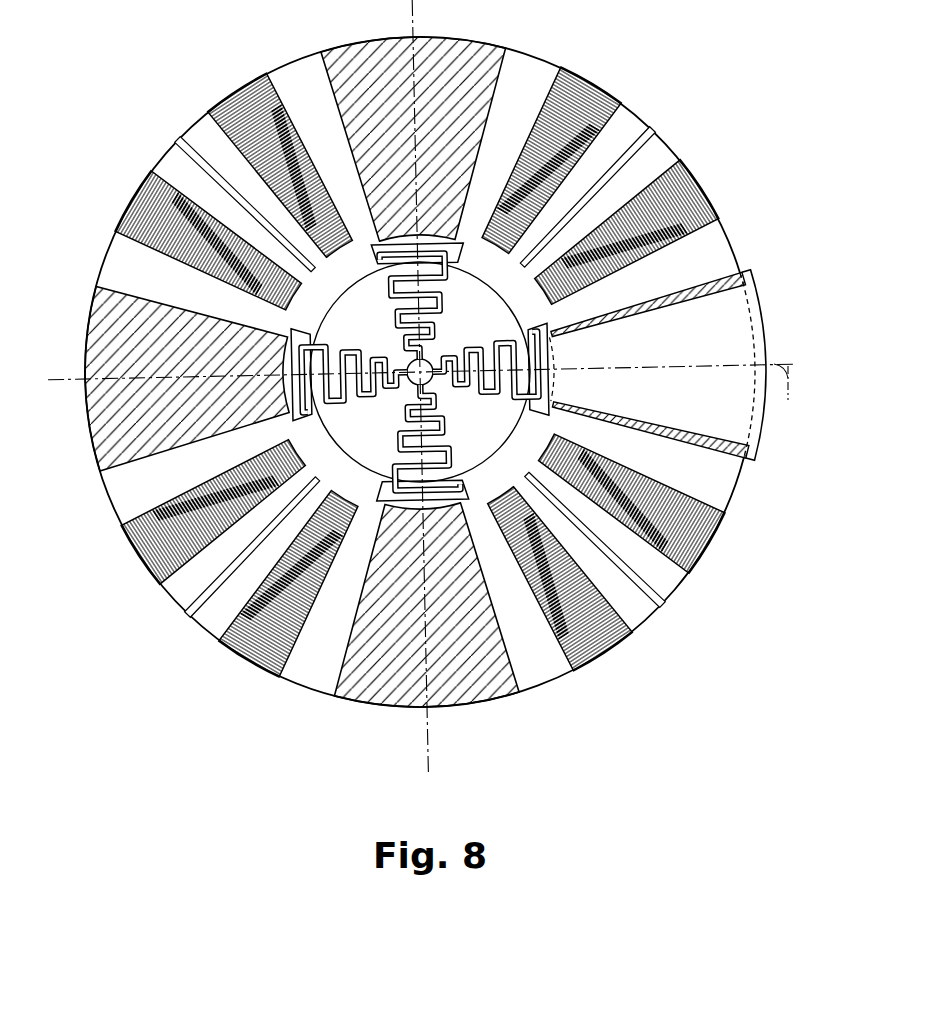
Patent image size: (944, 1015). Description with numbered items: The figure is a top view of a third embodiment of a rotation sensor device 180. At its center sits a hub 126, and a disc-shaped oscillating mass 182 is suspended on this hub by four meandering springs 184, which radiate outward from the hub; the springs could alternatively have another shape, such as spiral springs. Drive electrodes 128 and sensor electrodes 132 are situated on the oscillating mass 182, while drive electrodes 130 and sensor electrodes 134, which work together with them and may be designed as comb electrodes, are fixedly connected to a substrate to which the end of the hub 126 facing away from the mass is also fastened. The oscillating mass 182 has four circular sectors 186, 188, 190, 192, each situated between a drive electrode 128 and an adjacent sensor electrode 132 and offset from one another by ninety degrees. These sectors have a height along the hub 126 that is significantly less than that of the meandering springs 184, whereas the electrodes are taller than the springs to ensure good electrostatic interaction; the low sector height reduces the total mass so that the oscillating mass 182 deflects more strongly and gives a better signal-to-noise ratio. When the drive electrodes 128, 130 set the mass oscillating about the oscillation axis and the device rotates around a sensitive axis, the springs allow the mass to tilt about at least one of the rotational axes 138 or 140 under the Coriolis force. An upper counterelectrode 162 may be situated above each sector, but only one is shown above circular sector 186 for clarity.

The hub 126 is at (410, 382).
The drive electrodes 128 is at (562, 70).
The drive electrodes 130 is at (612, 90).
The sensor electrodes 132 is at (265, 75).
The sensor electrodes 134 is at (222, 100).
The rotational axis 138 is at (432, 393).
The rotational axis 140 is at (430, 748).
The upper counterelectrode 162 is at (765, 330).
The rotation sensor device 180 is at (724, 659).
The oscillating mass 182 is at (770, 467).
The meandering springs 184 is at (495, 388).
The circular sector 186 is at (668, 292).
The circular sector 188 is at (436, 630).
The circular sector 190 is at (158, 428).
The circular sector 192 is at (358, 141).